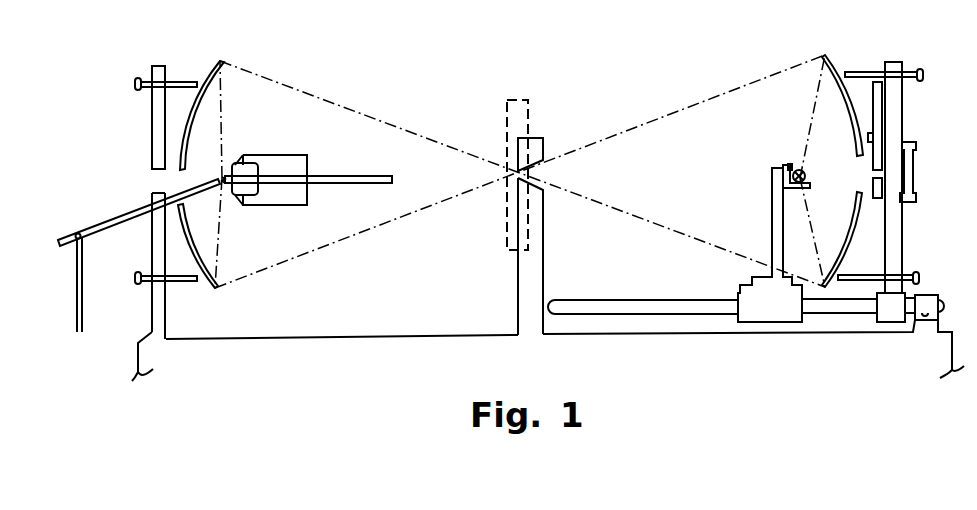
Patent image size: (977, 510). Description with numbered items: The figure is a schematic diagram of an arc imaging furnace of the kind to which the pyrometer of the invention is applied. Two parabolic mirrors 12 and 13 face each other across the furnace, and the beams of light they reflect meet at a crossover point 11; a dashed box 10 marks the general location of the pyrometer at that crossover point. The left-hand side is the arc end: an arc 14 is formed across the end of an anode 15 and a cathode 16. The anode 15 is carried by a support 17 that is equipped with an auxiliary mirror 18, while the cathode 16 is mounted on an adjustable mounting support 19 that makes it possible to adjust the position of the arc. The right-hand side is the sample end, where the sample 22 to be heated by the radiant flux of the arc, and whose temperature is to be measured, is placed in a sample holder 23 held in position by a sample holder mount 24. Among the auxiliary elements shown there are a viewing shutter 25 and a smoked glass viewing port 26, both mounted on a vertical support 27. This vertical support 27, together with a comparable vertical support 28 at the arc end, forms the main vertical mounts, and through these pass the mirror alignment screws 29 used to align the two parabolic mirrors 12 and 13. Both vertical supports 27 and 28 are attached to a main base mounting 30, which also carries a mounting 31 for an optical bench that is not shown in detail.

The box 10 is at (520, 108).
The crossover point 11 is at (517, 175).
The parabolic mirror 12 is at (213, 63).
The parabolic mirror 13 is at (828, 55).
The arc 14 is at (222, 176).
The anode 15 is at (345, 179).
The cathode 16 is at (118, 217).
The support 17 is at (288, 163).
The auxiliary mirror 18 is at (238, 165).
The adjustable mounting support 19 is at (78, 278).
The photocell 22 is at (802, 176).
The sample holder 23 is at (788, 166).
The sample holder mount 24 is at (780, 208).
The viewing shutter 25 is at (876, 110).
The smoked glass viewing port 26 is at (913, 168).
The vertical support 27 is at (897, 233).
The vertical support 28 is at (160, 117).
The mirror alignment screws 29 is at (137, 282).
The main base mounting 30 is at (658, 364).
The mounting 31 is at (700, 307).